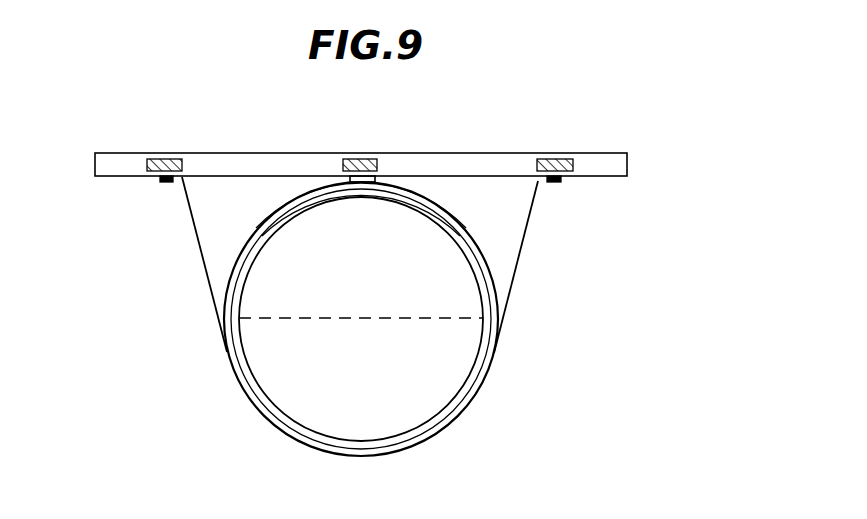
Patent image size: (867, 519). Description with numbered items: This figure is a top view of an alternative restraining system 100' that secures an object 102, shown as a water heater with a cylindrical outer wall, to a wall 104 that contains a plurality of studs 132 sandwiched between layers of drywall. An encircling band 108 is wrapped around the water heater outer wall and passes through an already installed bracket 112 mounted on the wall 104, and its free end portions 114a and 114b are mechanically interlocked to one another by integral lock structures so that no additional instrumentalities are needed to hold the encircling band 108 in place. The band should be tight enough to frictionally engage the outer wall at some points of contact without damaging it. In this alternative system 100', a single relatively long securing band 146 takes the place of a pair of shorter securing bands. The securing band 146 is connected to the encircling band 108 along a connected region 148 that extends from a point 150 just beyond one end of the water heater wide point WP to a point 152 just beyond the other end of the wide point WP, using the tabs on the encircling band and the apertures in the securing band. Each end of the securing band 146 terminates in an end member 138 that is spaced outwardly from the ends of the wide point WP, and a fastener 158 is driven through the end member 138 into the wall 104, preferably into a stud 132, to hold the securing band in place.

The restraining system 100' is at (430, 303).
The object 102 is at (387, 379).
The wall 104 is at (606, 153).
The encircling band 108 is at (473, 235).
The bracket 112 is at (352, 176).
The free end portion 114a is at (300, 186).
The free end portion 114b is at (305, 184).
The stud 132 is at (380, 163).
The end member 138 is at (152, 177).
The securing band 146 is at (518, 271).
The connected region 148 is at (408, 452).
The point 150 is at (503, 349).
The point 152 is at (218, 351).
The fastener 158 is at (165, 183).
The water heater wide point WP is at (362, 318).